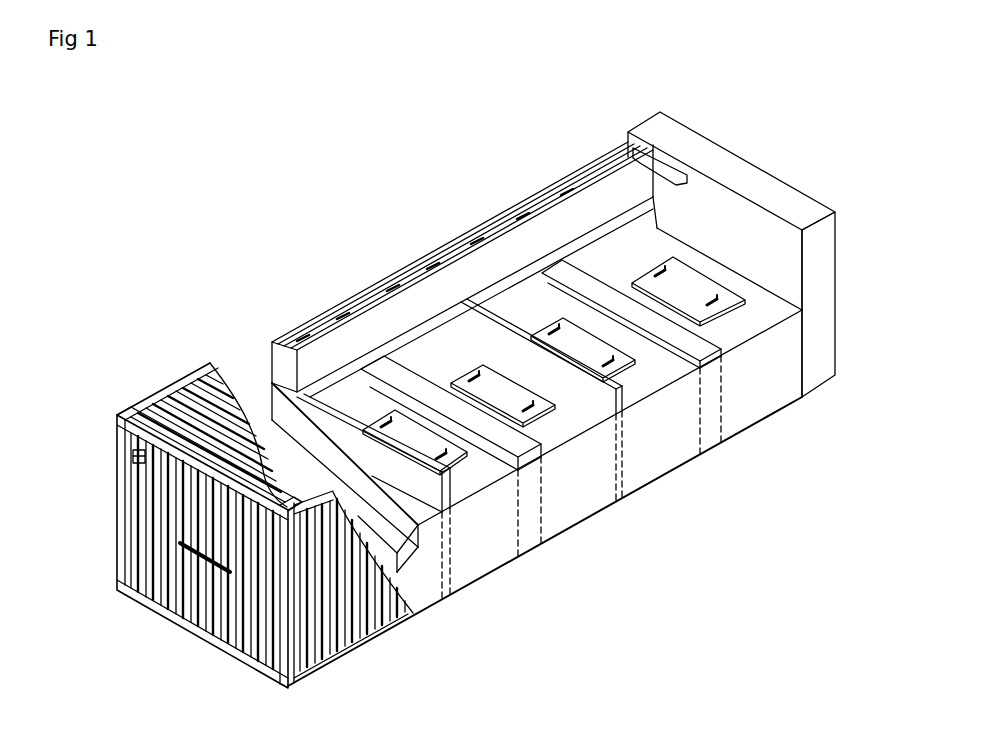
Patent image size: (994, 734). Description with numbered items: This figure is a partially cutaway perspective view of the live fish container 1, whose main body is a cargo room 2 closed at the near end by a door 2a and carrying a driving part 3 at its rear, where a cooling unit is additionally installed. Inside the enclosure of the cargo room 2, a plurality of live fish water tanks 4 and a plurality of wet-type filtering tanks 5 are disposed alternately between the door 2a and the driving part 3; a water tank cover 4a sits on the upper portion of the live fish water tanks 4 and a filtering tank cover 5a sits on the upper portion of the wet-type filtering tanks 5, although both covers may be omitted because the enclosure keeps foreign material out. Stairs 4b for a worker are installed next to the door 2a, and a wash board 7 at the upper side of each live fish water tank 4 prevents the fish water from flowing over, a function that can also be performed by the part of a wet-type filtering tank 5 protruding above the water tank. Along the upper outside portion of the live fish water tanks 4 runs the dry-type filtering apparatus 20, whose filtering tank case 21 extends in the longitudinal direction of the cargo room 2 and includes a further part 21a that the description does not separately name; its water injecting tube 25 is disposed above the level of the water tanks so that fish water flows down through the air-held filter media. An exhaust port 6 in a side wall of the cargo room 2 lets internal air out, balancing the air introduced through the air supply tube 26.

The live fish container 1 is at (445, 196).
The cargo room 2 is at (232, 465).
The door 2a is at (180, 593).
The driving part 3 is at (703, 150).
The live fish water tanks 4 is at (553, 459).
The water tank cover 4a is at (452, 447).
The stairs 4b is at (393, 573).
The wet-type filtering tanks 5 is at (532, 513).
The filtering tank cover 5a is at (710, 332).
The exhaust port 6 is at (133, 458).
The wash board 7 is at (355, 430).
The dry-type filtering apparatus 20 is at (479, 229).
The filtering tank case 21 is at (637, 140).
The beam side face 21a is at (420, 334).
The water injecting tube 25 is at (593, 157).
The air supply tube 26 is at (507, 217).